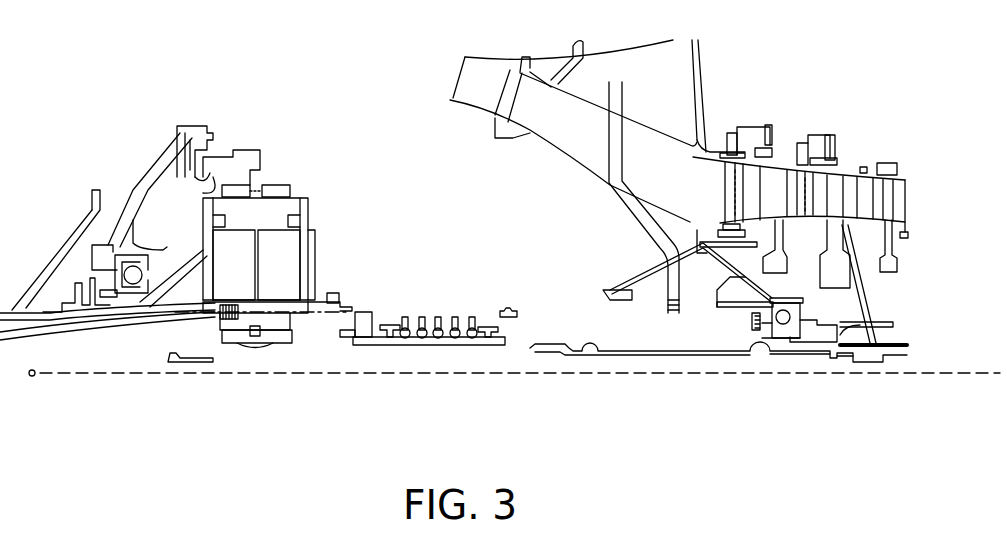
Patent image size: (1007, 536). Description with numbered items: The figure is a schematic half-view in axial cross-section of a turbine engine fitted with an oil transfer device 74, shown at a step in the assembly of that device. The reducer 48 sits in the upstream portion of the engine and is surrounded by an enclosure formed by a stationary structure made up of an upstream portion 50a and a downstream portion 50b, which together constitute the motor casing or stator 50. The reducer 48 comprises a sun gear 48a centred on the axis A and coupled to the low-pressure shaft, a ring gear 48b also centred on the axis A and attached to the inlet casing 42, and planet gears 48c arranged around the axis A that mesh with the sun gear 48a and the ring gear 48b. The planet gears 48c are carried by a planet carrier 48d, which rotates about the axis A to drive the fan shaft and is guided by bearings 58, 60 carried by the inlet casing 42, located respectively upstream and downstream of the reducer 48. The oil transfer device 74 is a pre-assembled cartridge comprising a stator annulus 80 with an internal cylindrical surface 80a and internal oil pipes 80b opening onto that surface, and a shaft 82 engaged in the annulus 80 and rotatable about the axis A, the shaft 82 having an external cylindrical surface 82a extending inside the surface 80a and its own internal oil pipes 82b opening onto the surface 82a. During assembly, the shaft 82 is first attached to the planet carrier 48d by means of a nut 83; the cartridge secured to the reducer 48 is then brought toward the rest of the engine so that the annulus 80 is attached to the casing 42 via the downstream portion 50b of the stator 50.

The axis A is at (110, 378).
The inlet casing 42 is at (679, 192).
The reducer 48 is at (293, 244).
The sun gear 48a is at (272, 349).
The ring gear 48b is at (237, 183).
The planet gears 48c is at (270, 207).
The planet carrier 48d is at (303, 263).
The stator 50 is at (150, 190).
The upstream portion 50a is at (137, 203).
The downstream portion 50b is at (643, 280).
The bearing 58 is at (125, 292).
The bearing 60 is at (345, 299).
The oil transfer device 74 is at (436, 357).
The stator annulus 80 is at (422, 335).
The internal cylindrical surface 80a is at (423, 328).
The internal oil pipes 80b is at (441, 330).
The shaft 82 is at (466, 400).
The external cylindrical surface 82a is at (428, 347).
The internal oil pipes 82b is at (460, 348).
The nut 83 is at (508, 307).